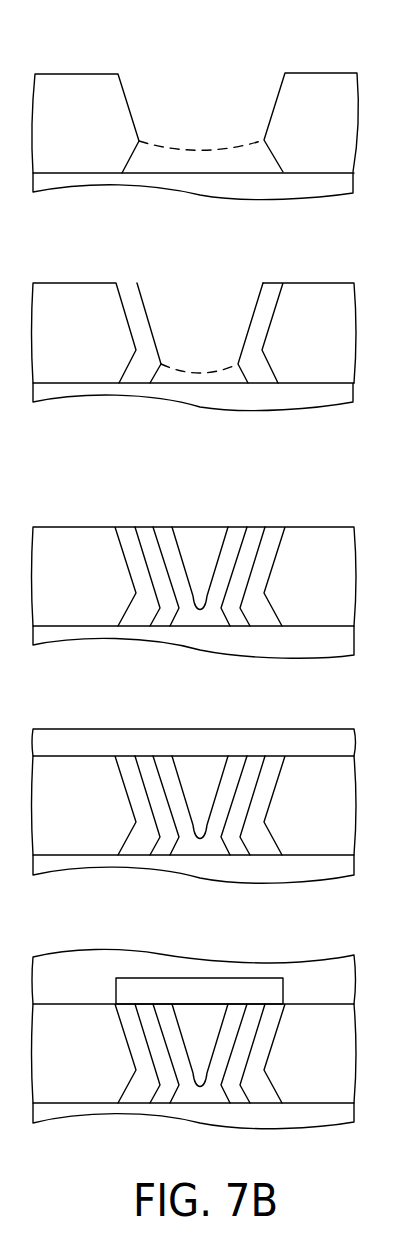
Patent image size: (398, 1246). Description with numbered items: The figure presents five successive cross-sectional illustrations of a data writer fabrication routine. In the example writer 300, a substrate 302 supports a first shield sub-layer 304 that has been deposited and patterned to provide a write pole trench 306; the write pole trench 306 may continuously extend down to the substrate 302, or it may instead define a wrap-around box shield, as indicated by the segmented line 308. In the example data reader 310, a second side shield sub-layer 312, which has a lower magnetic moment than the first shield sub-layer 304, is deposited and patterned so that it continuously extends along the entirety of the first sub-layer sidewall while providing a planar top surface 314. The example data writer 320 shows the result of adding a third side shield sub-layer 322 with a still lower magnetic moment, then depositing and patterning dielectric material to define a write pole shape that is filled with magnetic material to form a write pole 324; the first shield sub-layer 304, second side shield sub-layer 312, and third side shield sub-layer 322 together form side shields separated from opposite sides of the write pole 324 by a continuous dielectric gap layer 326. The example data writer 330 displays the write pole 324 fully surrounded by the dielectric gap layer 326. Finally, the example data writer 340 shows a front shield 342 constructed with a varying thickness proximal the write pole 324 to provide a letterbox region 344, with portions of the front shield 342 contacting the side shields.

The example writer 300 is at (329, 60).
The substrate 302 is at (298, 196).
The first shield sub-layer 304 is at (77, 98).
The write pole trench 306 is at (193, 91).
The segmented line 308 is at (246, 142).
The example data reader 310 is at (330, 264).
The second side shield sub-layer 312 is at (127, 281).
The planar top surface 314 is at (89, 283).
The example data writer 320 is at (330, 508).
The third side shield sub-layer 322 is at (255, 524).
The write pole 324 is at (218, 559).
The continuous dielectric gap layer 326 is at (197, 626).
The example data writer 330 is at (330, 723).
The example data writer 340 is at (330, 943).
The front shield 342 is at (76, 979).
The letterbox region 344 is at (218, 1002).